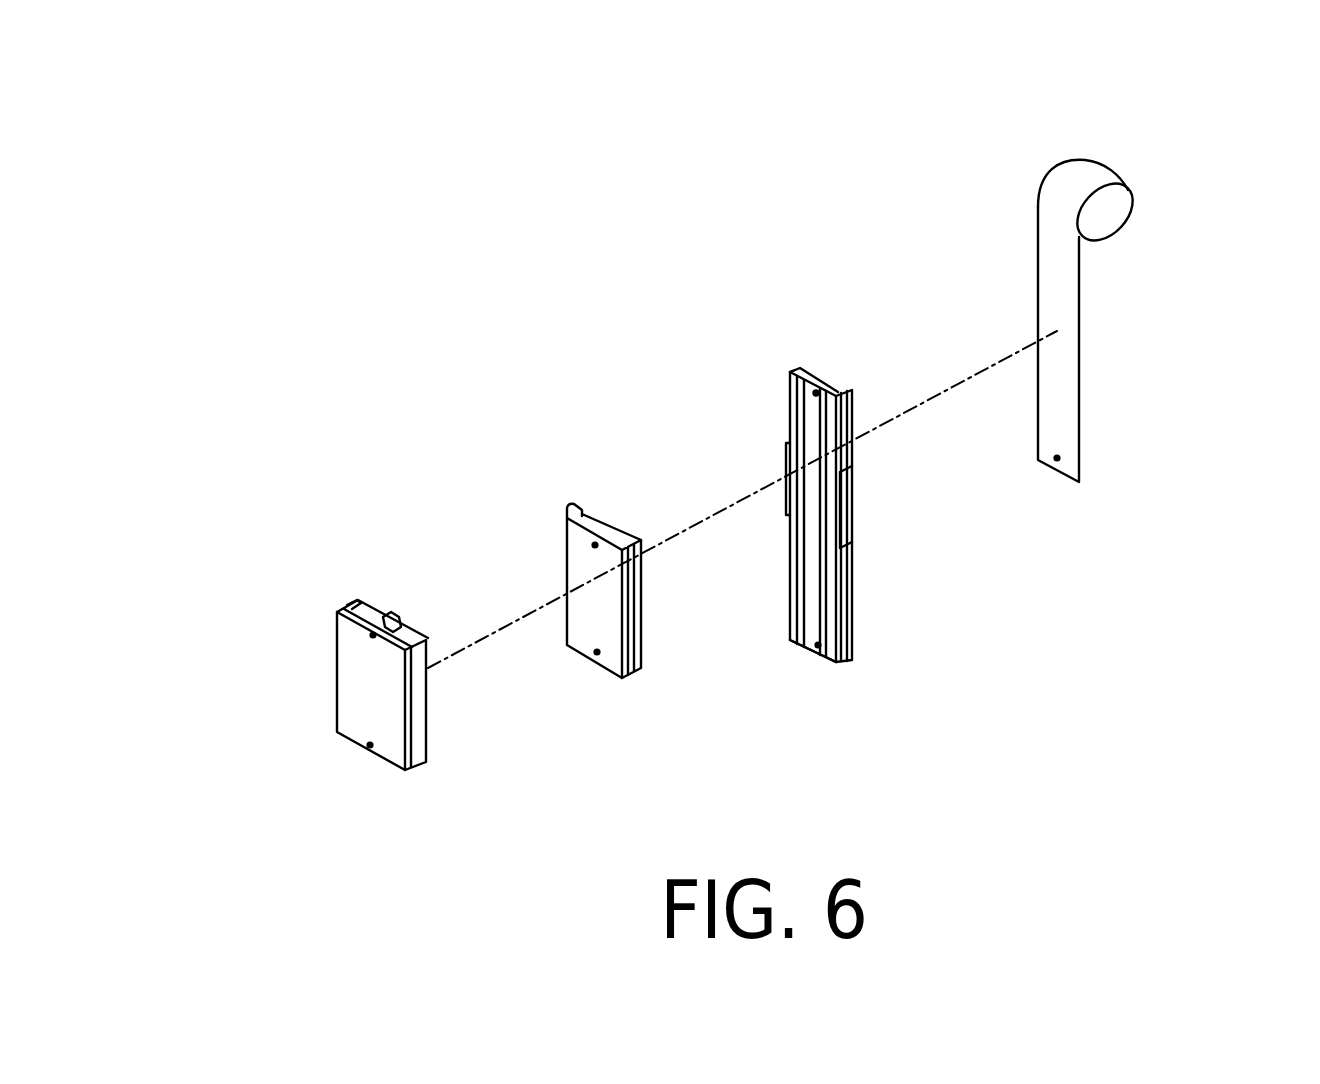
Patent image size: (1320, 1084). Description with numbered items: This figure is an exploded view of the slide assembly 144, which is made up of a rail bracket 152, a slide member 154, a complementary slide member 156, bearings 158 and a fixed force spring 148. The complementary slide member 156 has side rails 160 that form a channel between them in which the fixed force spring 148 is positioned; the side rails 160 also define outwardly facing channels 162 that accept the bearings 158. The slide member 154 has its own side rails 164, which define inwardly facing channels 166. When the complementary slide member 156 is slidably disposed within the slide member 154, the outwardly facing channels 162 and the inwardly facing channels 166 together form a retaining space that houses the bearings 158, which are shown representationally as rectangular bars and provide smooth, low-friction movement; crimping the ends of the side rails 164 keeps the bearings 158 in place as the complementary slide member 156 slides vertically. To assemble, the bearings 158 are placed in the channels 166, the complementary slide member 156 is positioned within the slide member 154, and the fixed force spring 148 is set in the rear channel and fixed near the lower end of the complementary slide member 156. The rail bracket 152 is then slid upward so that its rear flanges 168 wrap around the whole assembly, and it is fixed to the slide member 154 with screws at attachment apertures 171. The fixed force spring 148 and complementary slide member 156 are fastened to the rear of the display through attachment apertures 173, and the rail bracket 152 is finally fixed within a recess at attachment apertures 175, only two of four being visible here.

The slide assembly 144 is at (410, 260).
The fixed force spring 148 is at (1160, 190).
The rail bracket 152 is at (364, 703).
The slide member 154 is at (667, 608).
The complementary slide member 156 is at (827, 450).
The bearings 158 is at (790, 462).
The side rails 160 is at (822, 385).
The outwardly facing channels 162 is at (800, 375).
The side rails 164 is at (637, 568).
The inwardly facing channels 166 is at (620, 545).
The rear flanges 168 is at (345, 606).
The attachment apertures 171 is at (373, 635).
The attachment apertures 173 is at (1057, 458).
The attachment apertures 175 is at (422, 632).